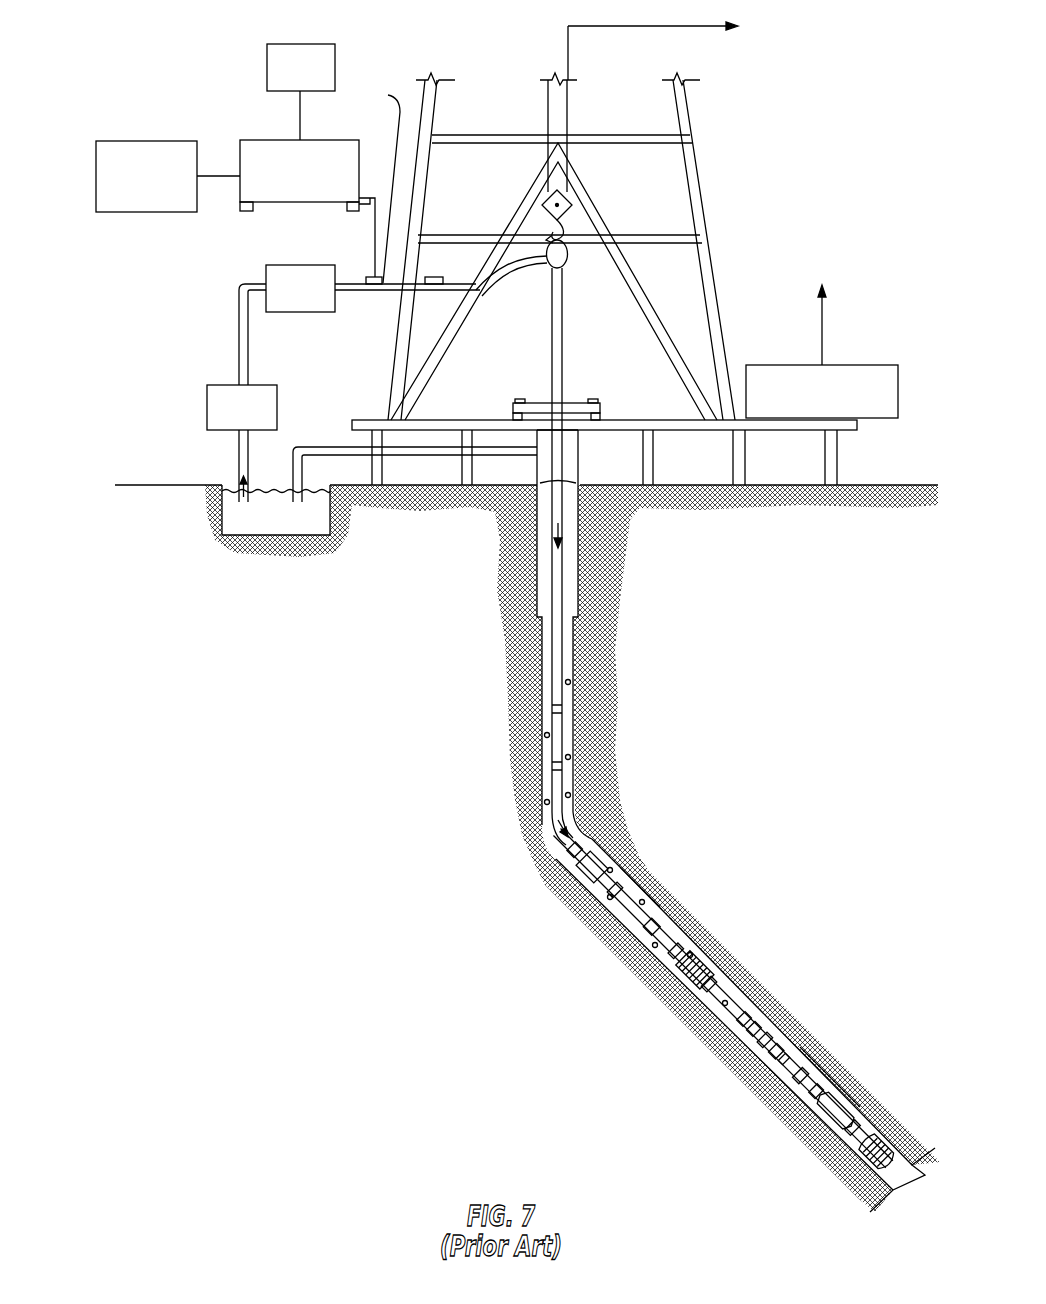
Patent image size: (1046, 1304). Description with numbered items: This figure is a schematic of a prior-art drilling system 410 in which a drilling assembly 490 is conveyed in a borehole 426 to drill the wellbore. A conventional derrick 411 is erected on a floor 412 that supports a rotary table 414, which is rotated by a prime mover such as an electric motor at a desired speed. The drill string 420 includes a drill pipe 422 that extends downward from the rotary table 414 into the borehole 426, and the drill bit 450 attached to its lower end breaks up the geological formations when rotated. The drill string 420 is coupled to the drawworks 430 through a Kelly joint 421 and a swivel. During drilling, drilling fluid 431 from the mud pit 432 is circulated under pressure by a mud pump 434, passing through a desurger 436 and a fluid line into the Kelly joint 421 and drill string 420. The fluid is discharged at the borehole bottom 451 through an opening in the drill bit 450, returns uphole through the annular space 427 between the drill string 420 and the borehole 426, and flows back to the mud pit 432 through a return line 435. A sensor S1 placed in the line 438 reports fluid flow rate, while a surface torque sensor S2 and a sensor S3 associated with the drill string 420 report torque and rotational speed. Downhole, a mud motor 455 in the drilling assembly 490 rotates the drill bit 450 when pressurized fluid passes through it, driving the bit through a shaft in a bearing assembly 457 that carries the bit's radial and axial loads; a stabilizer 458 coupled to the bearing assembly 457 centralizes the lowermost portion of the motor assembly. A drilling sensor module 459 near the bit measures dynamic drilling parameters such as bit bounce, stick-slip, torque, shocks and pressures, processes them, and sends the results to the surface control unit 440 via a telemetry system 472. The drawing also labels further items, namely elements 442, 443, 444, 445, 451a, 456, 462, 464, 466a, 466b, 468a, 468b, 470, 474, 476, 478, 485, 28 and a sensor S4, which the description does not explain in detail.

The drilling system 410 is at (465, 50).
The derrick 411 is at (697, 240).
The floor 412 is at (730, 410).
The rotary table 414 is at (574, 400).
The drill string 420 is at (563, 698).
The Kelly joint 421 is at (564, 337).
The drill pipe 422 is at (548, 727).
The borehole 426 is at (577, 818).
The annular space 427 is at (594, 848).
The drawworks 430 is at (863, 365).
The drilling fluid 431 is at (228, 515).
The mud pit 432 is at (276, 532).
The mud pump 434 is at (224, 385).
The return line 435 is at (500, 455).
The desurger 436 is at (300, 265).
The line 438 is at (375, 290).
The surface control unit 440 is at (270, 140).
The recorder 442 is at (300, 44).
The signal line 443 is at (375, 183).
The alarms 444 is at (147, 141).
The control line 445 is at (370, 197).
The drill bit 450 is at (893, 1137).
The borehole bottom 451 is at (884, 1197).
The drill bit 451a is at (877, 1152).
The downhole motor 455 is at (647, 893).
The swivel 456 is at (567, 240).
The bearing assembly 457 is at (837, 1083).
The stabilizer 458 is at (835, 1110).
The drilling sensor module 459 is at (853, 1128).
The sensor sub 462 is at (816, 1091).
The communication module 464 is at (776, 1051).
The stabilizer 466a is at (695, 970).
The stabilizer 466b is at (800, 1075).
The sensor 468a is at (744, 1019).
The sensor 468b is at (754, 1029).
The MWD tool 470 is at (592, 867).
The telemetry system 472 is at (553, 822).
The telemetry sub 474 is at (765, 1040).
The sensor 476 is at (783, 1058).
The drill collar joint 478 is at (575, 850).
The rig floor 485 is at (420, 425).
The drilling assembly 490 is at (745, 880).
The mud hose 28 is at (546, 262).
The sensor S1 is at (437, 277).
The surface torque sensor S2 is at (598, 400).
The sensor S3 is at (518, 399).
The hook load sensor S4 is at (568, 192).